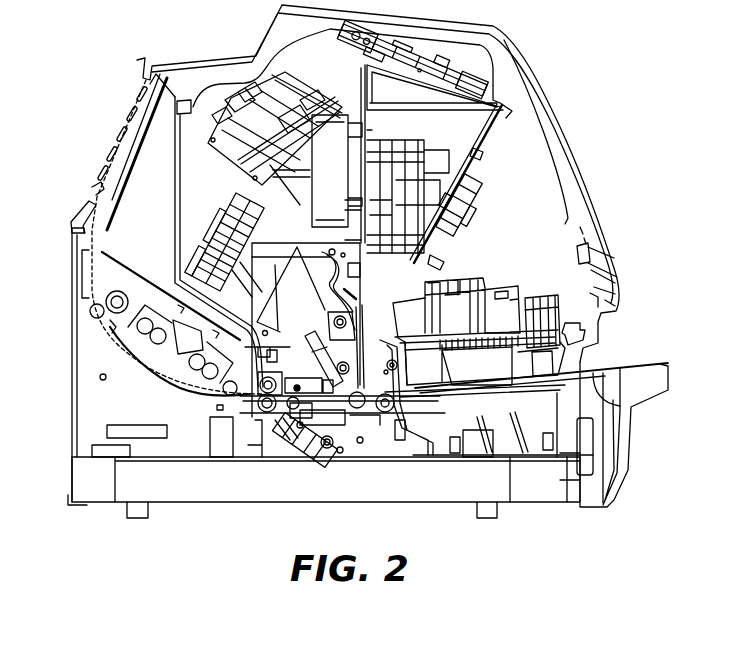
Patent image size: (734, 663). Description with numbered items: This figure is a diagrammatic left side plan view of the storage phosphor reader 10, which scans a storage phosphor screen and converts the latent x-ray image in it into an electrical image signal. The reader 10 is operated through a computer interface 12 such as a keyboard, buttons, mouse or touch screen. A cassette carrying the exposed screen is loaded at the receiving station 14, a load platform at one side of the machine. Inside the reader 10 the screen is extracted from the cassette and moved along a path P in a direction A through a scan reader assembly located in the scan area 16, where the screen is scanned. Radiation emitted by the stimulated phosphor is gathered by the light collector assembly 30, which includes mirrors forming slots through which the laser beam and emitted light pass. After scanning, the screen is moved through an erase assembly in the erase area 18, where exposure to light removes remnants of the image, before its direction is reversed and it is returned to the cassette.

The storage phosphor reader 10 is at (594, 90).
The computer interface 12 is at (419, 143).
The receiving station 14 is at (637, 340).
The scan area 16 is at (302, 465).
The erase area 18 is at (165, 365).
The light collector assembly 30 is at (267, 241).
The path P is at (93, 185).
The direction A is at (660, 352).